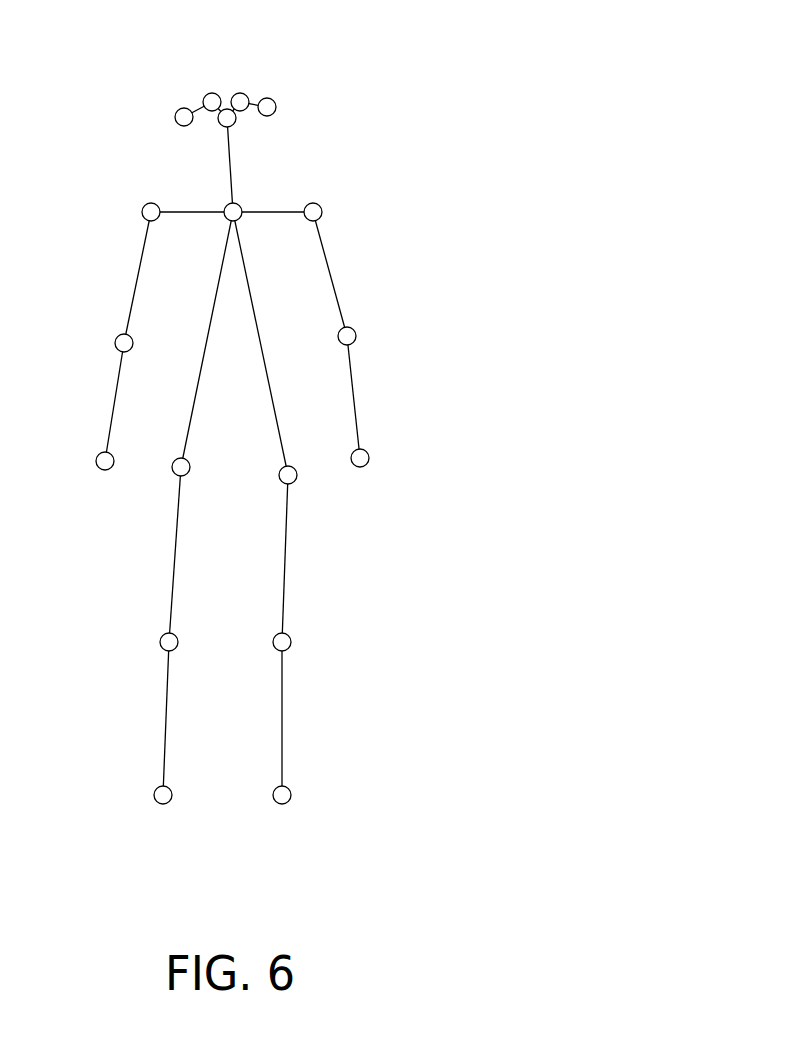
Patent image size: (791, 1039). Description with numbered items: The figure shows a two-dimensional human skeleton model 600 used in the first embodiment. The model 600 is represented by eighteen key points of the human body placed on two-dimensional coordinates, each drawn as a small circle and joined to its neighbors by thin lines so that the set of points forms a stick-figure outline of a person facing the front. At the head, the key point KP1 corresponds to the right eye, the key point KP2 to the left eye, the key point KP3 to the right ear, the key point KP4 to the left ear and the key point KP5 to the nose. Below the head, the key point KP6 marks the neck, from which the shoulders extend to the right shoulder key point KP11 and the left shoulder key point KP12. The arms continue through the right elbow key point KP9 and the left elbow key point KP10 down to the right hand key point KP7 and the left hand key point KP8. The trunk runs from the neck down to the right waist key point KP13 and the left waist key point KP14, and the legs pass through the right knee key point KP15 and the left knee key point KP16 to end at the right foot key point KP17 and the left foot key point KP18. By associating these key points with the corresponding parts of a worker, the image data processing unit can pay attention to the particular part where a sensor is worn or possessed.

The two-dimensional human skeleton model 600 is at (383, 83).
The key point (right eye) KP1 is at (199, 87).
The key point (left eye) KP2 is at (253, 87).
The key point (right ear) KP3 is at (160, 114).
The key point (left ear) KP4 is at (289, 111).
The key point (nose) KP5 is at (245, 133).
The key point (neck) KP6 is at (252, 199).
The key point (right hand) KP7 is at (83, 461).
The key point (left hand) KP8 is at (382, 458).
The key point (right elbow) KP9 is at (100, 344).
The key point (left elbow) KP10 is at (375, 336).
The key point (right shoulder) KP11 is at (121, 214).
The key point (left shoulder) KP12 is at (343, 213).
The key point (right waist) KP13 is at (156, 483).
The key point (left waist) KP14 is at (314, 492).
The key point (right knee) KP15 is at (140, 643).
The key point (left knee) KP16 is at (311, 643).
The key point (right foot) KP17 is at (148, 812).
The key point (left foot) KP18 is at (300, 812).